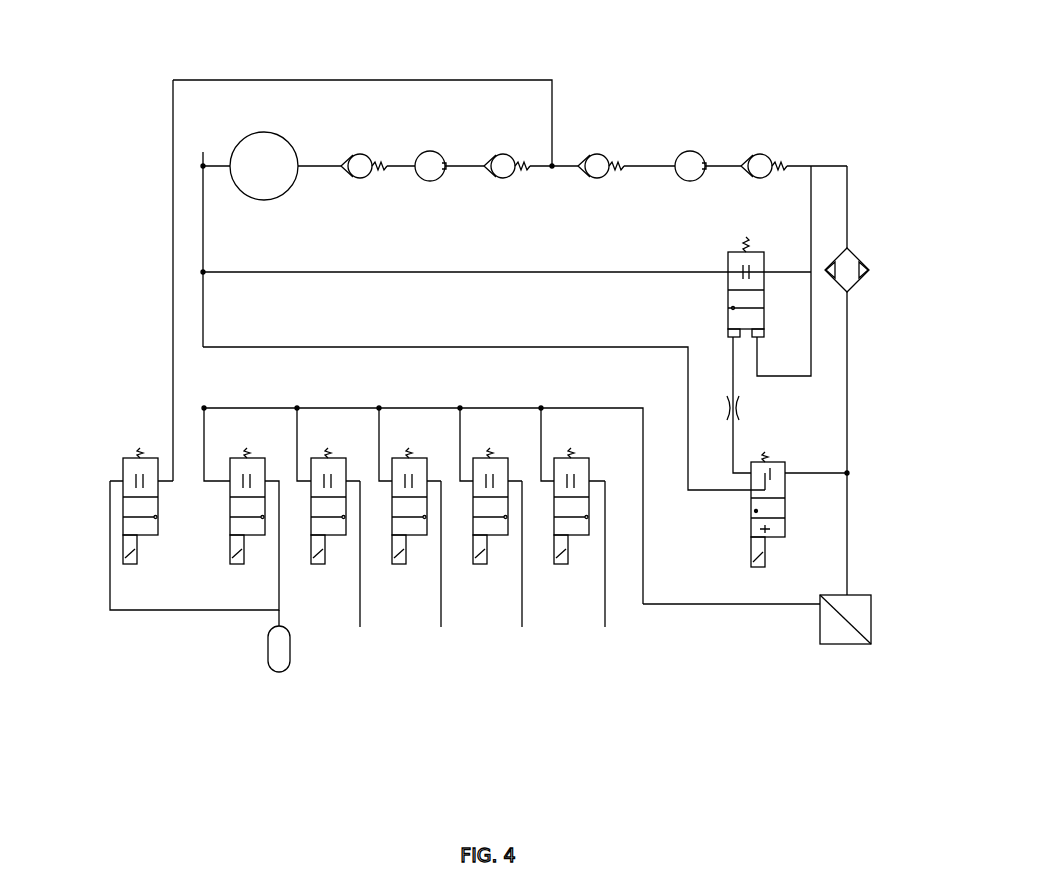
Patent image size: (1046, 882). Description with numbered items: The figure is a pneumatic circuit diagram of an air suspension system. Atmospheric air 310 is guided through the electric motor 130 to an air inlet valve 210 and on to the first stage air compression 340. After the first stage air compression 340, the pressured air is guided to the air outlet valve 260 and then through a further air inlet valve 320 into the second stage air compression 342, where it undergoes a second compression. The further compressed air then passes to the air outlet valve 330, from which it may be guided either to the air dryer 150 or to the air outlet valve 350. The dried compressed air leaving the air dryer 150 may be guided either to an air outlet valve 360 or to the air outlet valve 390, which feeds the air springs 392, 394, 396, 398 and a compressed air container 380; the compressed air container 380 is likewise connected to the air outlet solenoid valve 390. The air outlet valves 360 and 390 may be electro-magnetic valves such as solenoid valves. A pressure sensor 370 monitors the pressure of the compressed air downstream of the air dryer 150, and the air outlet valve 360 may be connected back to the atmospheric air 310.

The electric motor 130 is at (264, 132).
The air inlet valve 210 is at (360, 142).
The first stage air compression 340 is at (430, 140).
The air outlet valve 260 is at (503, 142).
The air inlet valve 320 is at (597, 142).
The second stage air compression 342 is at (690, 140).
The air outlet valve 330 is at (762, 142).
The atmospheric air 310 is at (200, 150).
The air outlet valve 350 is at (770, 260).
The air dryer 150 is at (872, 270).
The air outlet valve 360 is at (788, 503).
The pressure sensor 370 is at (874, 616).
The air outlet valve 390 is at (121, 505).
The compressed air container 380 is at (279, 674).
The air spring 392 is at (360, 632).
The air spring 394 is at (441, 632).
The air spring 396 is at (522, 632).
The air spring 398 is at (605, 632).